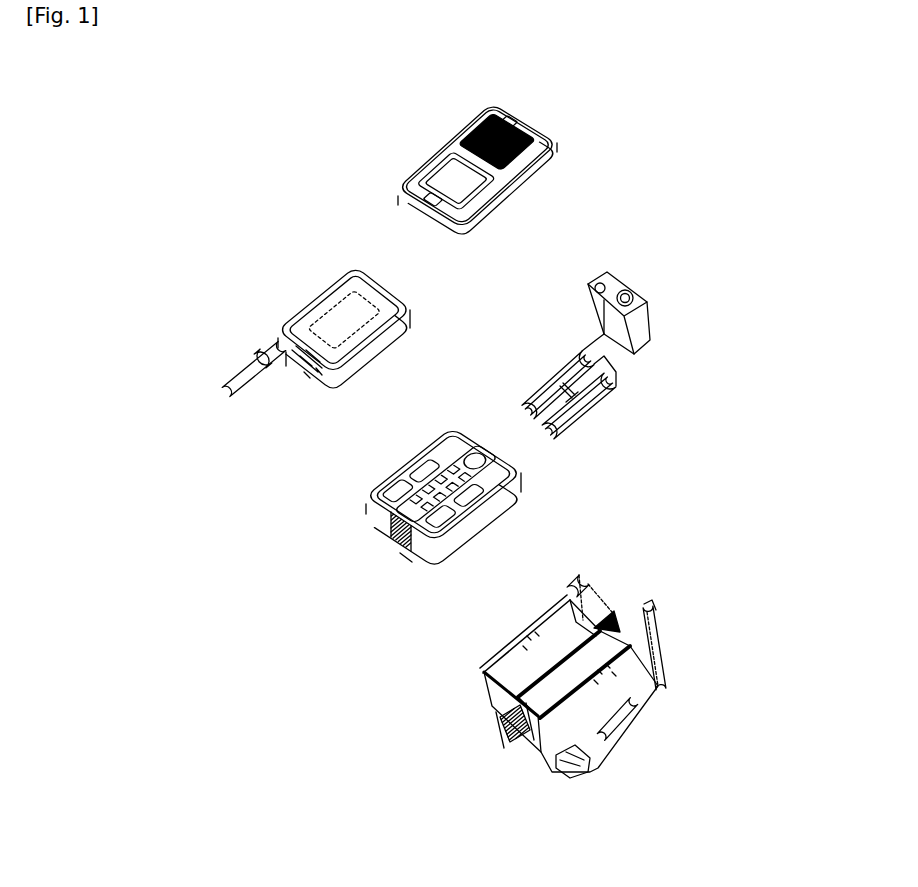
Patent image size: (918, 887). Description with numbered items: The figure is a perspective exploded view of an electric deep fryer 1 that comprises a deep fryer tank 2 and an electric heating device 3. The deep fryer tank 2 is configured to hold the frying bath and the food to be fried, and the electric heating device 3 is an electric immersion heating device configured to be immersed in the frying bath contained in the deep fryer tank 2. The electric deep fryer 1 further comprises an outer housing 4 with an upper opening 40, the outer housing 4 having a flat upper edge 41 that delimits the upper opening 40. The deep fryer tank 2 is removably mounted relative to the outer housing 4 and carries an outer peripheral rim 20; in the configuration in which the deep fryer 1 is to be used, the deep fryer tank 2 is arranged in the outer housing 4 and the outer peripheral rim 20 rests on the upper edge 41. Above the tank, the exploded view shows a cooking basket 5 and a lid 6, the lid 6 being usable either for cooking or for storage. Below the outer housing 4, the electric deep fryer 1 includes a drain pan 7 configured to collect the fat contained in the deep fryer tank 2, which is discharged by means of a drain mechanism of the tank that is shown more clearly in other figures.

The electric deep fryer 1 is at (308, 656).
The deep fryer tank 2 is at (405, 558).
The electric heating device 3 is at (600, 400).
The outer housing 4 is at (543, 668).
The cooking basket 5 is at (302, 306).
The lid 6 is at (430, 143).
The drain pan 7 is at (567, 773).
The outer peripheral rim 20 is at (370, 508).
The upper opening 40 is at (590, 585).
The upper edge 41 is at (505, 695).